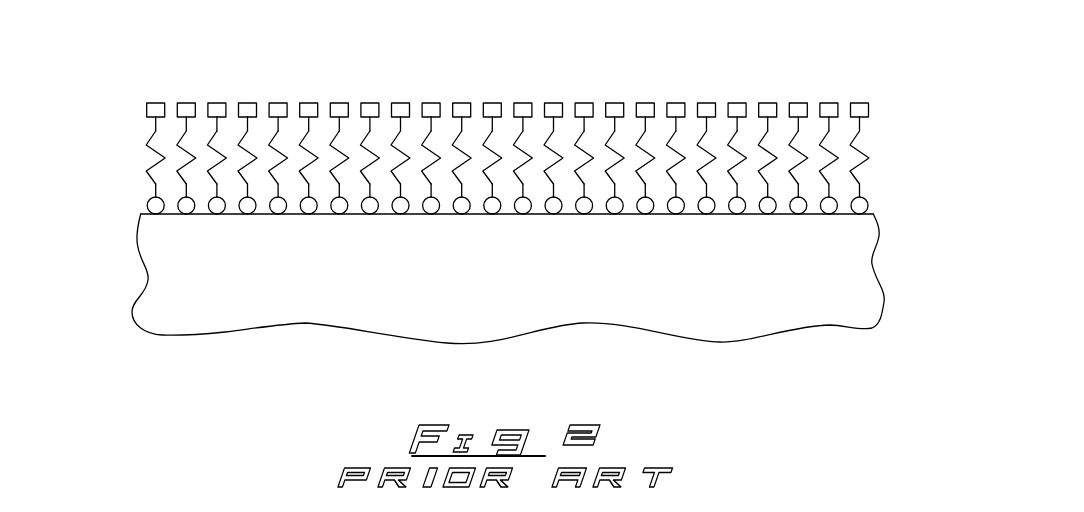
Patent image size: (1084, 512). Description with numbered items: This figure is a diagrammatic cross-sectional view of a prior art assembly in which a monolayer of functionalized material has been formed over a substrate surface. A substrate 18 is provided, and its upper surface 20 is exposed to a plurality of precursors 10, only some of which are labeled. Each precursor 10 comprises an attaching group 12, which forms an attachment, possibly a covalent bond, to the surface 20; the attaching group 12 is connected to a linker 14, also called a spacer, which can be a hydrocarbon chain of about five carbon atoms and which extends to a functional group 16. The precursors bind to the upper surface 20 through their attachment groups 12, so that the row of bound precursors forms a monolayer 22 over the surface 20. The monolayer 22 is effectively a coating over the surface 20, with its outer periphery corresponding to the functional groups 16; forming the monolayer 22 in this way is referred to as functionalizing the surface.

The precursor 10 is at (126, 180).
The attaching group 12 is at (153, 213).
The linker 14 is at (130, 138).
The functional group 16 is at (185, 103).
The substrate 18 is at (833, 296).
The surface 20 is at (866, 206).
The monolayer 22 is at (911, 128).